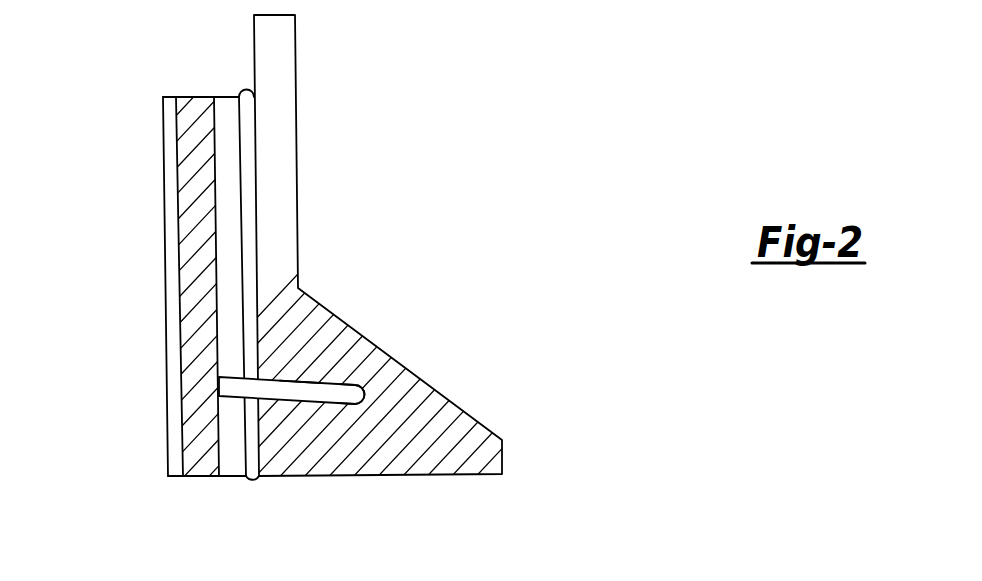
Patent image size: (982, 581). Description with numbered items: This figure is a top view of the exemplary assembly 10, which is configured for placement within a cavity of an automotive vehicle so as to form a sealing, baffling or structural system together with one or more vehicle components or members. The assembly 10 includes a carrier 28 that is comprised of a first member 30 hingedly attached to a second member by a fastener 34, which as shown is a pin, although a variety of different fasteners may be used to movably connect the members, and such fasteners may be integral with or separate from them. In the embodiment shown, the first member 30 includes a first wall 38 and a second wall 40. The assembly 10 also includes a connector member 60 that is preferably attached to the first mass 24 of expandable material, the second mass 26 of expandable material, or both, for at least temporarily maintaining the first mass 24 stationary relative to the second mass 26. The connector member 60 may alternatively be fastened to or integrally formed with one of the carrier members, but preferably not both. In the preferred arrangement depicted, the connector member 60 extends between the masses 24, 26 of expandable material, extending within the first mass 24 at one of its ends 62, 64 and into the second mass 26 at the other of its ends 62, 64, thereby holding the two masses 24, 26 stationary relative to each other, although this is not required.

The assembly 10 is at (383, 175).
The first mass of expandable material 24 is at (193, 112).
The second mass of expandable material 26 is at (453, 418).
The carrier 28 is at (238, 517).
The first member 30 is at (140, 261).
The fastener 34 is at (248, 95).
The first wall 38 is at (235, 462).
The second wall 40 is at (173, 403).
The connector member 60 is at (295, 388).
The end of connector member 62 is at (220, 382).
The end of connector member 64 is at (357, 388).